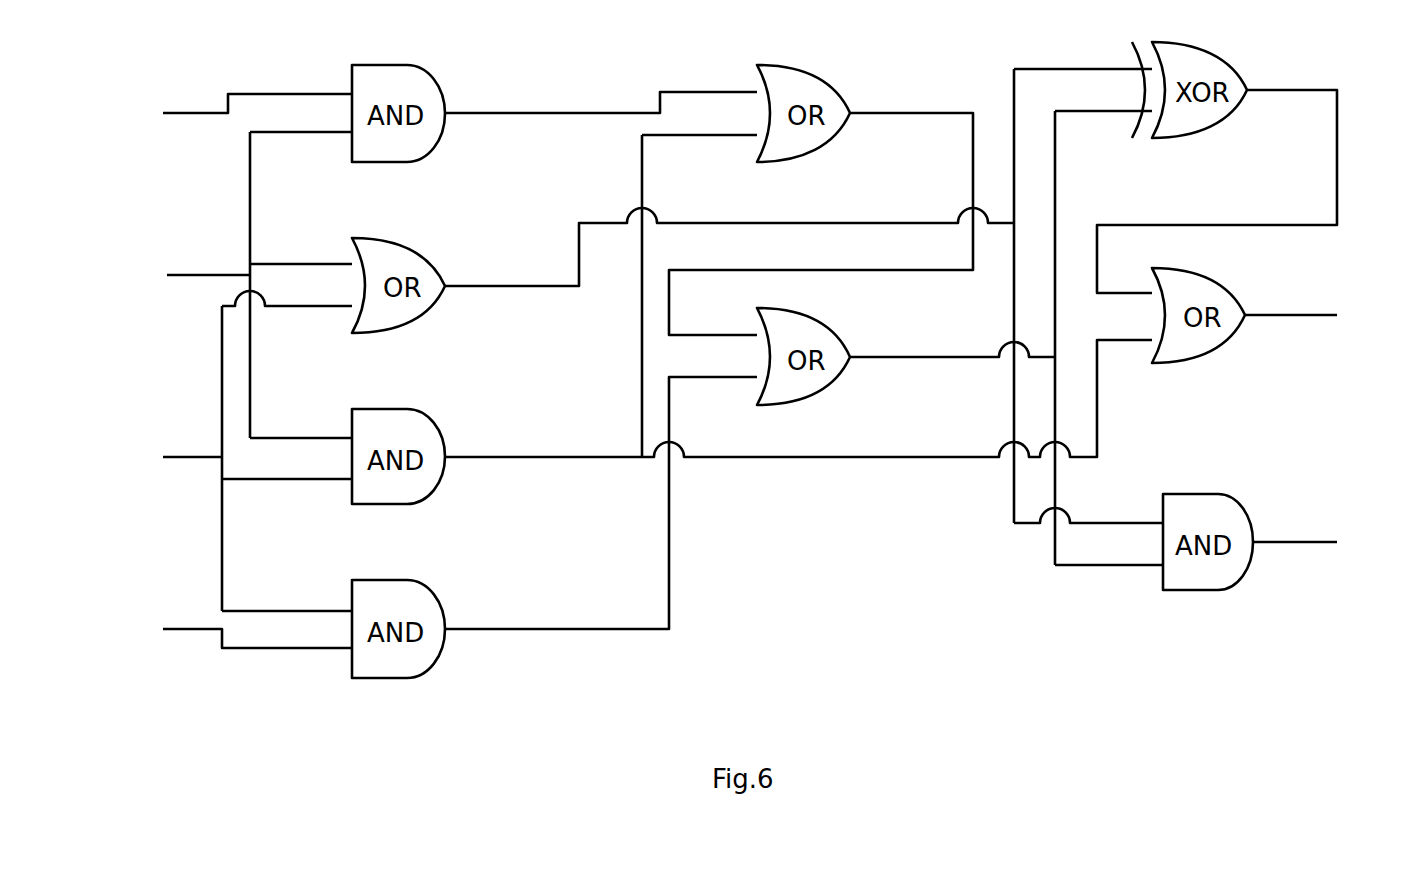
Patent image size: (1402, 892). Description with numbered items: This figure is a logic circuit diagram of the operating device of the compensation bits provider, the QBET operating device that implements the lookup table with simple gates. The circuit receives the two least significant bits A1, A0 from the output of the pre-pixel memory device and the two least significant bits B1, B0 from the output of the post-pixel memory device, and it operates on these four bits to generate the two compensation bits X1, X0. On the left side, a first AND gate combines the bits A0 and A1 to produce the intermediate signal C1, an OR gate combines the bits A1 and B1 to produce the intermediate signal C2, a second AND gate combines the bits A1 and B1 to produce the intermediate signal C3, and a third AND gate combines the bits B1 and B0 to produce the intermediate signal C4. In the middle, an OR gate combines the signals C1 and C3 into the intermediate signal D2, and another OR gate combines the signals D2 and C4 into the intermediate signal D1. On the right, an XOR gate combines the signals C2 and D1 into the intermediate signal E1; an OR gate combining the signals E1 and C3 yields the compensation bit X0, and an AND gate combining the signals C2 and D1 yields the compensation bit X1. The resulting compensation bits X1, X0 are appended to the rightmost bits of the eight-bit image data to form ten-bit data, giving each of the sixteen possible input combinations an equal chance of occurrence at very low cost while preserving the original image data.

The least significant bit A0 of pre-pixel output A0 is at (233, 94).
The least significant bit A1 of pre-pixel output A1 is at (233, 269).
The least significant bit B0 of post-pixel output B0 is at (233, 632).
The least significant bit B1 of post-pixel output B1 is at (233, 444).
The intermediate signal C1 is at (601, 88).
The intermediate signal C2 is at (804, 280).
The intermediate signal C3 is at (798, 279).
The intermediate signal C4 is at (601, 486).
The intermediate signal D1 is at (1006, 321).
The intermediate signal D2 is at (821, 208).
The intermediate signal E1 is at (1217, 176).
The compensation bit X0 is at (1315, 318).
The compensation bit X1 is at (1317, 546).